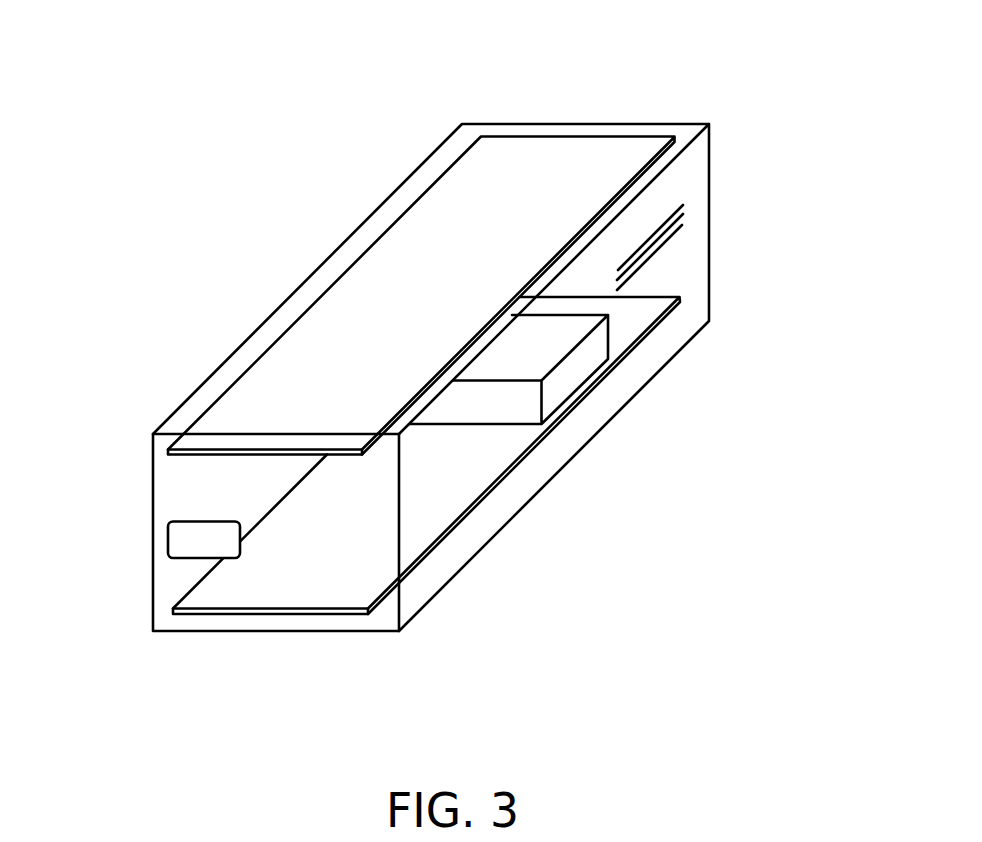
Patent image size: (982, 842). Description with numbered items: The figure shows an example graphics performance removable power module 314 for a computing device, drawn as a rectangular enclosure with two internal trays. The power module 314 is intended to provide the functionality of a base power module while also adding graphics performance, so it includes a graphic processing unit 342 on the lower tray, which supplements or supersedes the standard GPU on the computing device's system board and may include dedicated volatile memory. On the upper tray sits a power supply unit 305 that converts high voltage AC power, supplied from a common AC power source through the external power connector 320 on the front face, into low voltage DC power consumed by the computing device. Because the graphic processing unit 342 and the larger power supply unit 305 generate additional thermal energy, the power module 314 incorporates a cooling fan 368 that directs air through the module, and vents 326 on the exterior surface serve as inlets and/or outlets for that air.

The power module 314 is at (395, 102).
The power supply unit 305 is at (548, 212).
The graphic processing unit 342 is at (360, 576).
The external power connector 320 is at (168, 540).
The vents 326 is at (692, 178).
The cooling fan 368 is at (610, 337).